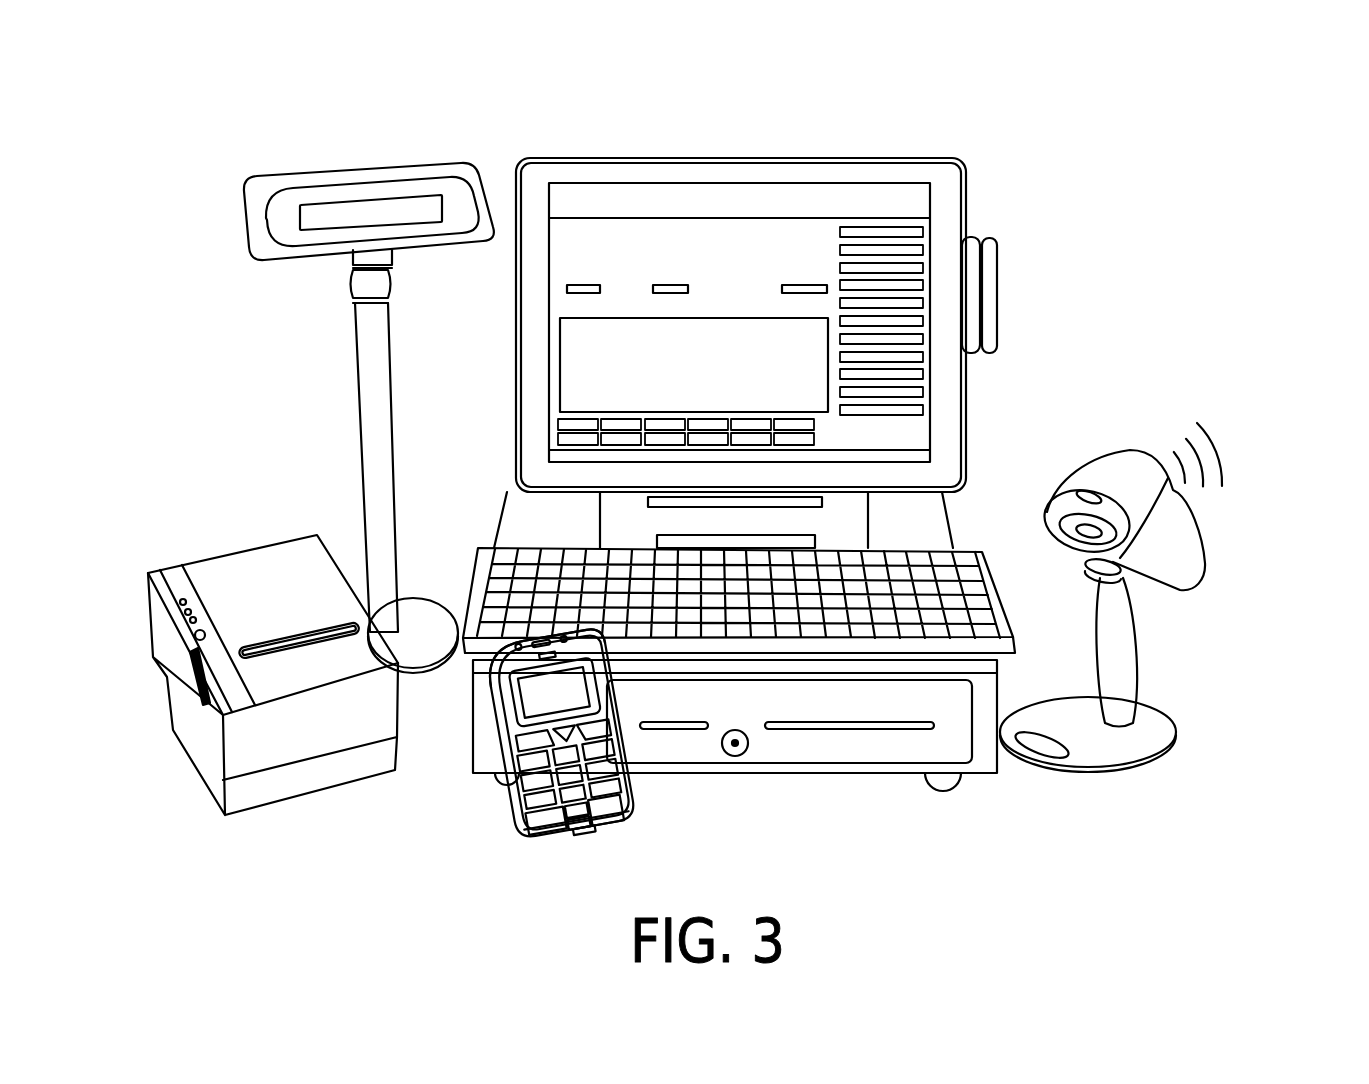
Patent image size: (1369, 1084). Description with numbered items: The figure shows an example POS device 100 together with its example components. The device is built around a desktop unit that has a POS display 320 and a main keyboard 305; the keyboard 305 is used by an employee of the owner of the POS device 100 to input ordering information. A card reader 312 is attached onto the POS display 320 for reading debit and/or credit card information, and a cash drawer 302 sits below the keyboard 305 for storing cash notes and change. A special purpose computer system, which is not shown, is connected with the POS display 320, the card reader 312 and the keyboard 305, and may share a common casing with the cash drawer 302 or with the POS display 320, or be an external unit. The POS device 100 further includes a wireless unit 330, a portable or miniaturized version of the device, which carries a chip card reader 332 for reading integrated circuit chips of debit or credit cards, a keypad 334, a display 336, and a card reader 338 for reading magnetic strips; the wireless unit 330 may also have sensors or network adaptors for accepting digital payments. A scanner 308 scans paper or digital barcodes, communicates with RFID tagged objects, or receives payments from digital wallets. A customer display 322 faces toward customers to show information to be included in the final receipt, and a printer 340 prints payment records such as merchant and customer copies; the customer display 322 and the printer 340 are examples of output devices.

The POS device 100 is at (158, 100).
The cash drawer 302 is at (928, 774).
The main keyboard 305 is at (967, 548).
The scanner 308 is at (1137, 450).
The card reader 312 is at (993, 257).
The POS display 320 is at (917, 160).
The customer display 322 is at (452, 163).
The wireless unit 330 is at (607, 763).
The chip card reader 332 is at (584, 830).
The keypad 334 is at (569, 777).
The display 336 is at (555, 692).
The card reader 338 is at (546, 657).
The printer 340 is at (237, 812).